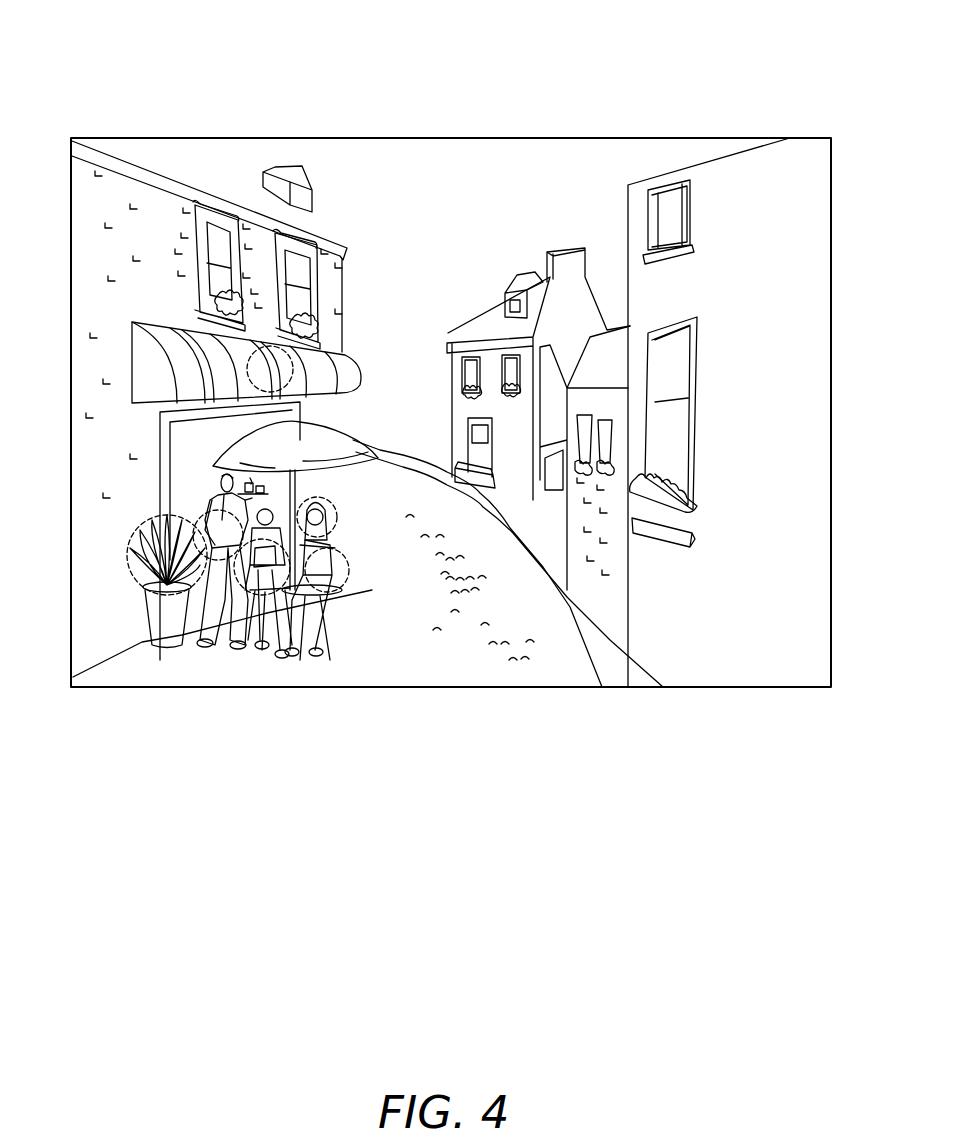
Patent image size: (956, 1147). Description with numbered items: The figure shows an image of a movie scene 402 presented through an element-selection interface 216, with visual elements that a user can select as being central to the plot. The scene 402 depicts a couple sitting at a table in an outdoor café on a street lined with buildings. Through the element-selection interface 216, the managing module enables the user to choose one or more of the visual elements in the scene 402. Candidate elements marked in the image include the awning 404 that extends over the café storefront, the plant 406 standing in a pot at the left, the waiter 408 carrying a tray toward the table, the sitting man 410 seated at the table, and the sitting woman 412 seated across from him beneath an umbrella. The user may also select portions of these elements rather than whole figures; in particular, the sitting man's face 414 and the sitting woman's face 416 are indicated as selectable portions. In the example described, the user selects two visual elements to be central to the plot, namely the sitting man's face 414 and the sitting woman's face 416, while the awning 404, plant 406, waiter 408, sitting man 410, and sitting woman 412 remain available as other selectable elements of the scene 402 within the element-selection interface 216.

The element-selection interface 216 is at (741, 97).
The scene 402 is at (187, 148).
The awning 404 is at (295, 360).
The plant 406 is at (192, 572).
The waiter 408 is at (217, 557).
The sitting man 410 is at (285, 650).
The sitting woman 412 is at (330, 600).
The sitting man's face 414 is at (290, 512).
The sitting woman's face 416 is at (338, 532).